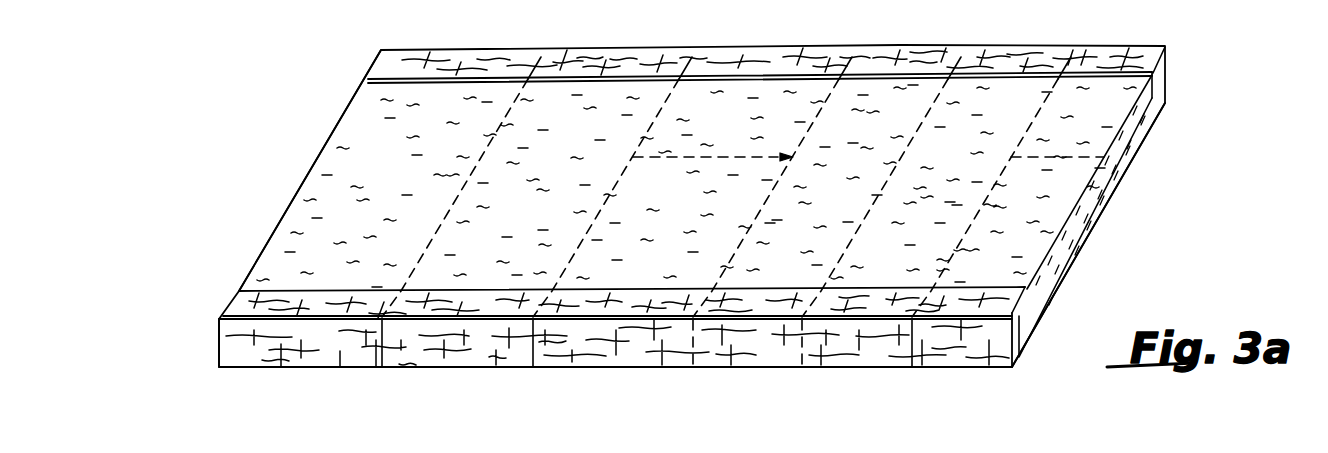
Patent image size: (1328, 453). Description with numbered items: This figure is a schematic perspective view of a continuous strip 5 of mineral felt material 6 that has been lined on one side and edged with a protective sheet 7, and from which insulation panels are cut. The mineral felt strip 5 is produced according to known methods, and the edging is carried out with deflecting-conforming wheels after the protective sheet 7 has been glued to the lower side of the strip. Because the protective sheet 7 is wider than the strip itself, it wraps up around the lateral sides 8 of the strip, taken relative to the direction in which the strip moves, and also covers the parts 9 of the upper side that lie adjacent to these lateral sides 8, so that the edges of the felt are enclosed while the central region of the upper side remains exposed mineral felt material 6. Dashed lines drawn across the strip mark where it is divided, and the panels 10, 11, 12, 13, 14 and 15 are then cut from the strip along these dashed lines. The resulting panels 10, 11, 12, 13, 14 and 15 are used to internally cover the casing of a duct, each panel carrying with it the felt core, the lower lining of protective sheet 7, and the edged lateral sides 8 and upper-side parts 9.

The strip 5 is at (283, 177).
The mineral felt material 6 is at (1144, 120).
The protective sheet 7 is at (216, 373).
The lateral sides 8 is at (341, 352).
The parts of the upper side 9 is at (1162, 47).
The panel 10 is at (278, 264).
The panel 11 is at (477, 283).
The panel 12 is at (635, 270).
The panel 13 is at (771, 270).
The panel 14 is at (882, 270).
The panel 15 is at (1052, 232).